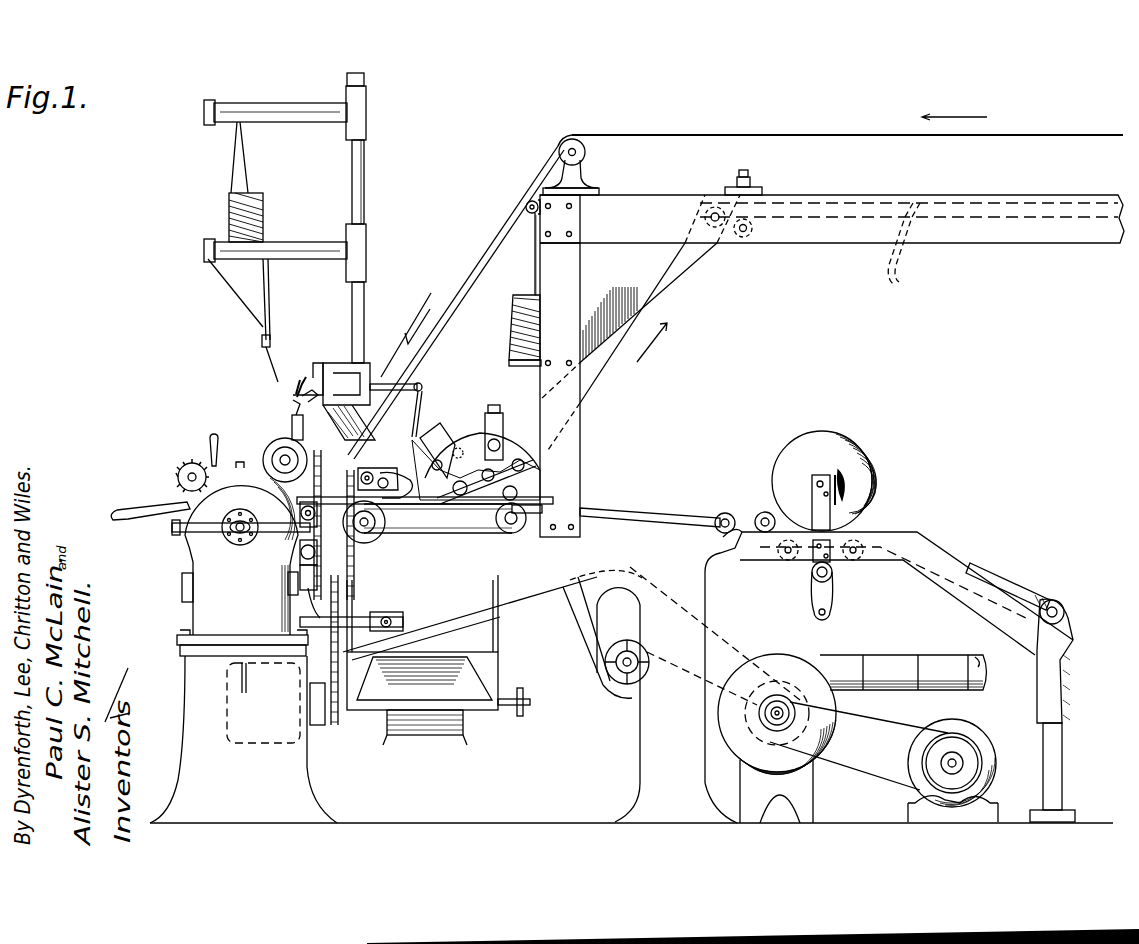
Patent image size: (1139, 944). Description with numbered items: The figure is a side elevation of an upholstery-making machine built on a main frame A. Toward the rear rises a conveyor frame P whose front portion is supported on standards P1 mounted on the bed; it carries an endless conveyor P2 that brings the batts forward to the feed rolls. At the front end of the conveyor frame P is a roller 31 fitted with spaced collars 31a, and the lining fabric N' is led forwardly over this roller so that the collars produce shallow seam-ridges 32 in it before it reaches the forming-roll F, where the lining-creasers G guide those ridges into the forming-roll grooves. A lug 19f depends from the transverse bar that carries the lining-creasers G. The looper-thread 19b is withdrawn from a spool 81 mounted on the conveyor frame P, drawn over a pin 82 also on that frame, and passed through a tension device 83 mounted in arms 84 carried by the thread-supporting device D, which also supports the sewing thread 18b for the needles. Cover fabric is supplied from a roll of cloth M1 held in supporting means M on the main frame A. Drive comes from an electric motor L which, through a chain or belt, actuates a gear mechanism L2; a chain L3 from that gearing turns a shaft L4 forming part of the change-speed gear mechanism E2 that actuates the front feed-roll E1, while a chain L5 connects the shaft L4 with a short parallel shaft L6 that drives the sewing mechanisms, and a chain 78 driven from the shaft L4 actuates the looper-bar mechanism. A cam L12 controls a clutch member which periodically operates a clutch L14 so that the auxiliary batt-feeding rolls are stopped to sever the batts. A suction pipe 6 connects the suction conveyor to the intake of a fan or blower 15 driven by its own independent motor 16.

The thread-supporting device D is at (368, 190).
The sewing thread 18b is at (222, 178).
The lining fabric N' is at (840, 125).
The roller 31 is at (578, 142).
The rollers or collars 31a is at (586, 160).
The seam-ridges 32 is at (492, 237).
The pin 82 is at (530, 202).
The spool 81 is at (513, 326).
The looper-thread 19b is at (536, 252).
The conveyor frame P is at (782, 246).
The endless conveyor P2 is at (930, 299).
The standards P1 is at (573, 447).
The arms 84 is at (383, 383).
The tension device 83 is at (421, 388).
The lug 19f is at (412, 441).
The forming-roll F is at (352, 430).
The lining-creasers G is at (292, 422).
The short parallel shaft L6 is at (278, 441).
The chain L5 is at (380, 468).
The front feed-roll E1 is at (183, 470).
The change-speed gear mechanism E2 is at (224, 642).
The electric motor L is at (272, 738).
The chain 78 is at (356, 574).
The cam L12 is at (288, 572).
The shaft L4 is at (308, 598).
The chain L3 is at (345, 617).
The clutch L14 is at (386, 535).
The gear mechanism L2 is at (483, 538).
The suction pipe 6 is at (613, 610).
The main frame A is at (612, 513).
The roll of cloth M1 is at (843, 447).
The supporting means M is at (825, 517).
The fan or blower 15 is at (812, 660).
The independent motor 16 is at (975, 735).